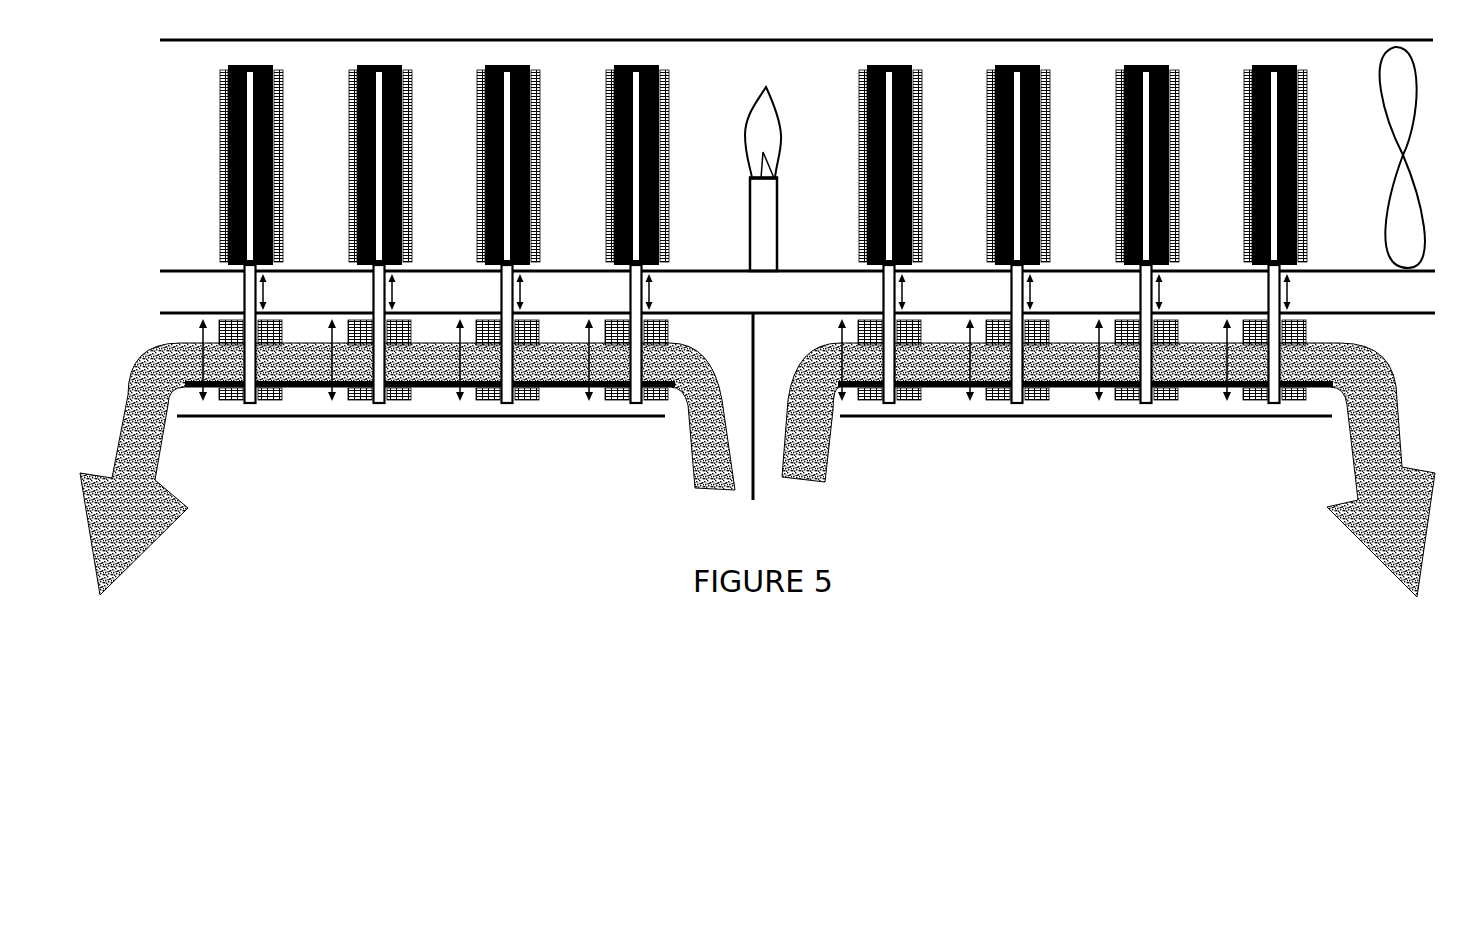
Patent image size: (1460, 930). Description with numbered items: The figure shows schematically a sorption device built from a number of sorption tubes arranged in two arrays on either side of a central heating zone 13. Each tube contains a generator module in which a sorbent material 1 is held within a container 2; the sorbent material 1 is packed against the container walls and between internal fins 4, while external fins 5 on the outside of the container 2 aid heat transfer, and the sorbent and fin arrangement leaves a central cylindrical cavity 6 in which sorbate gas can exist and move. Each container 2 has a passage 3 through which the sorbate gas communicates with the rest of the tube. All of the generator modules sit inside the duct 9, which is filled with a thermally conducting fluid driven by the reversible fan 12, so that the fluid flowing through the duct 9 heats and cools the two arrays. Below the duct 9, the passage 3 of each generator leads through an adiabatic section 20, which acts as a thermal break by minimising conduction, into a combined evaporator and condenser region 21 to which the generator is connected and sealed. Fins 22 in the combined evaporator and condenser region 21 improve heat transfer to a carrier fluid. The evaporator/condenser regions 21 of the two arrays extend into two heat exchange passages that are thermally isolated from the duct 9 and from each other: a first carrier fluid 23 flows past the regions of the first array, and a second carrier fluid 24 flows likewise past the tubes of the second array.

The sorbent material 1 is at (784, 264).
The container 2 is at (781, 63).
The passage 3 is at (746, 334).
The internal fins 4 is at (804, 166).
The external fins 5 is at (783, 165).
The central cylindrical cavity 6 is at (723, 166).
The duct 9 is at (796, 29).
The reversible fan 12 is at (1414, 157).
The heating zone 13 is at (779, 179).
The adiabatic section 20 is at (786, 292).
The combined evaporator and condenser region 21 is at (706, 360).
The fins 22 is at (777, 360).
The first carrier fluid 23 is at (407, 469).
The second carrier fluid 24 is at (1108, 470).